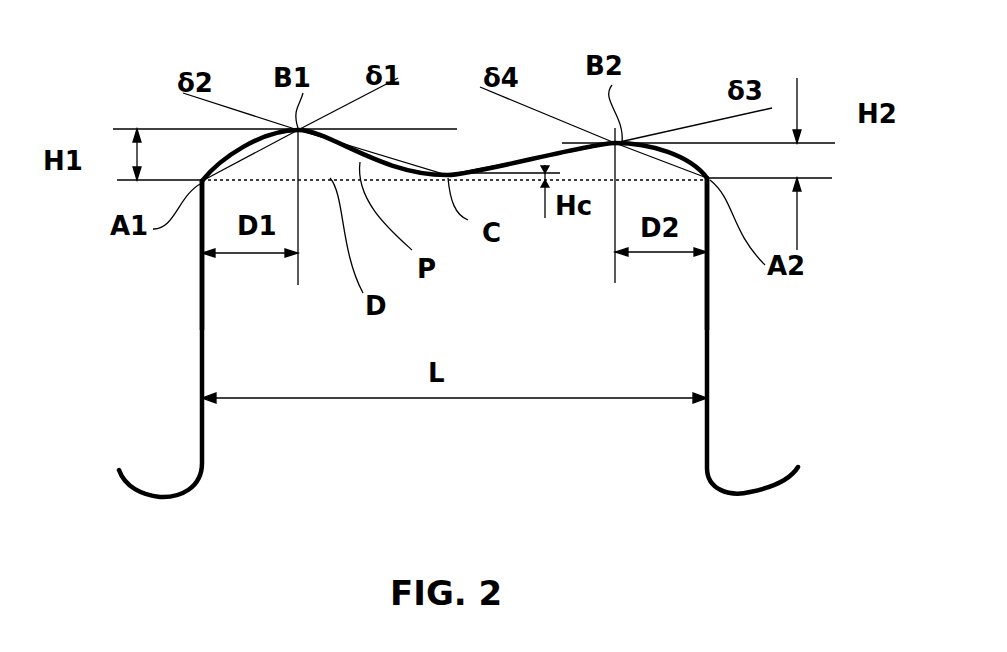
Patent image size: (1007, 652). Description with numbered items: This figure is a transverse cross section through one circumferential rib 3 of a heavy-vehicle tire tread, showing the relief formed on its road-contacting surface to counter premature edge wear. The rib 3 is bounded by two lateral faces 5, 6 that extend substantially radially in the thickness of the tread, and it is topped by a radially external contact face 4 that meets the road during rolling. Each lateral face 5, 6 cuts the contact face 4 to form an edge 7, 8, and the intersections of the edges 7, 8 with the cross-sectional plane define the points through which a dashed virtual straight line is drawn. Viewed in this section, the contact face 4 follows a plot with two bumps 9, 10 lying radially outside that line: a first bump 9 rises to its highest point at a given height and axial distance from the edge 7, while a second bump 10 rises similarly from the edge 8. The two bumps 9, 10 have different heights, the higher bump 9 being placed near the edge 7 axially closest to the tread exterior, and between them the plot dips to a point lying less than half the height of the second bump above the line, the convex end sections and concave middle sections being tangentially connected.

The circumferential rib 3 is at (293, 347).
The radially external contact face 4 is at (447, 175).
The lateral face 5 is at (200, 315).
The lateral face 6 is at (710, 352).
The edge 7 is at (197, 181).
The edge 8 is at (717, 175).
The first bump 9 is at (267, 163).
The second bump 10 is at (627, 163).